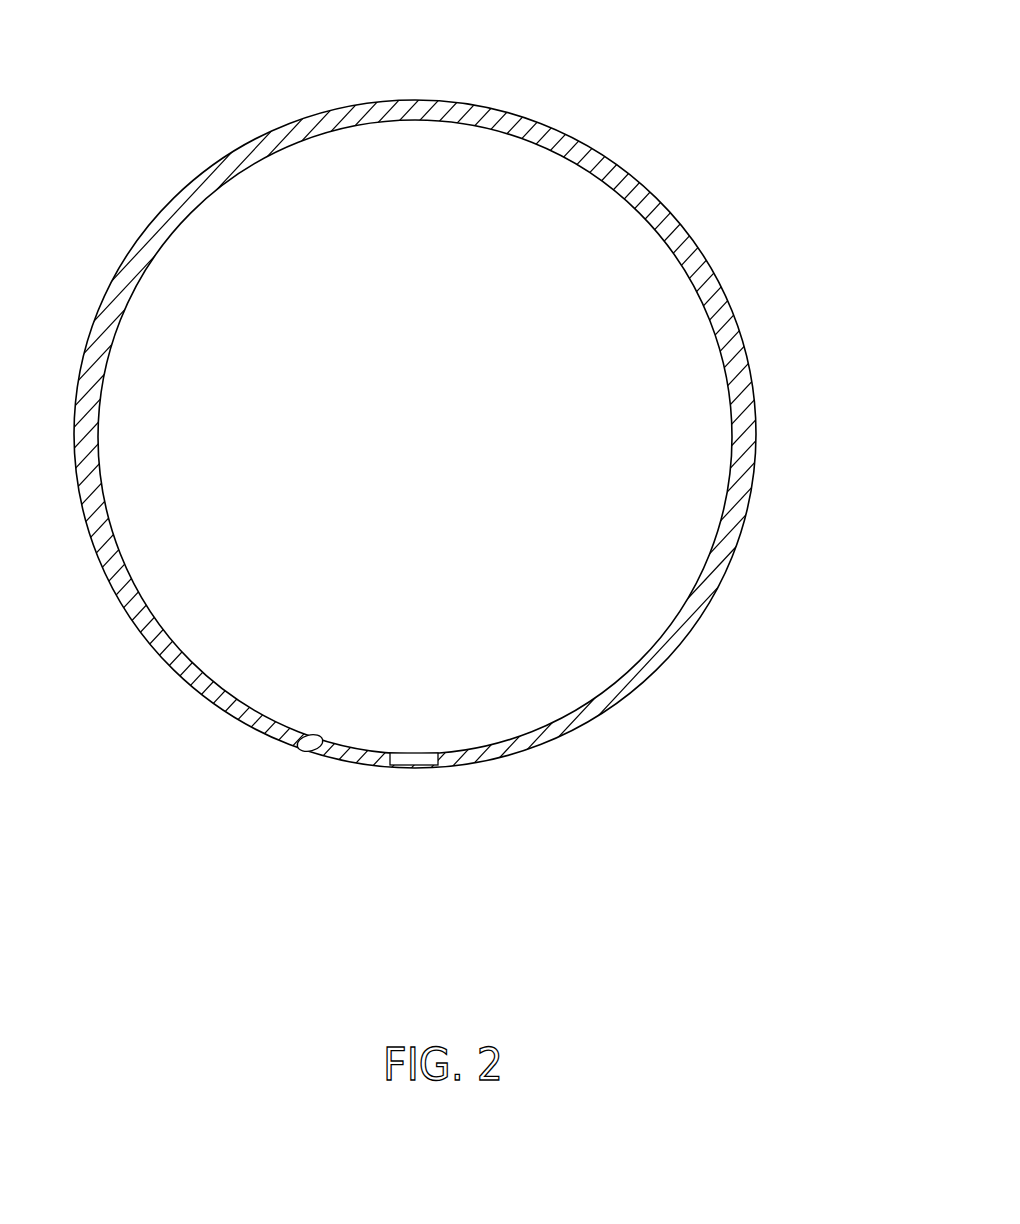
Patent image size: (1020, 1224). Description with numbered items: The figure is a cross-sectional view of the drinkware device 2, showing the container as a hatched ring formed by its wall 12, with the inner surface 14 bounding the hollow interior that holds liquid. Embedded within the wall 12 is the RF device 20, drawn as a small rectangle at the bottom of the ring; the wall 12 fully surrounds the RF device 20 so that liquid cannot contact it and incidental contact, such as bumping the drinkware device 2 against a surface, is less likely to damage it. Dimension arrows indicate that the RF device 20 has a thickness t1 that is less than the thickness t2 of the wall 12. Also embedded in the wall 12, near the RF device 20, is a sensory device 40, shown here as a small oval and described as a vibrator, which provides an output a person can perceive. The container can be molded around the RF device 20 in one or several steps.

The drinkware device 2 is at (756, 532).
The wall 12 is at (553, 125).
The inner surface 14 is at (655, 228).
The RF device 20 is at (450, 776).
The sensory device 40 is at (313, 752).
The thickness of RF device t1 is at (413, 813).
The thickness of wall t2 is at (687, 707).